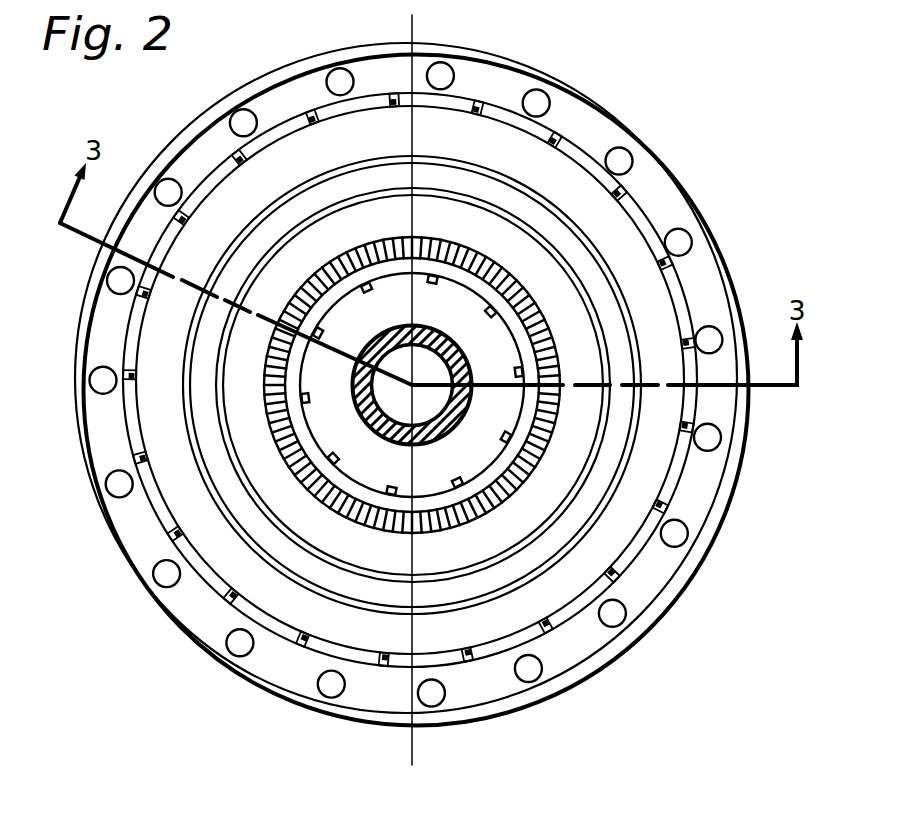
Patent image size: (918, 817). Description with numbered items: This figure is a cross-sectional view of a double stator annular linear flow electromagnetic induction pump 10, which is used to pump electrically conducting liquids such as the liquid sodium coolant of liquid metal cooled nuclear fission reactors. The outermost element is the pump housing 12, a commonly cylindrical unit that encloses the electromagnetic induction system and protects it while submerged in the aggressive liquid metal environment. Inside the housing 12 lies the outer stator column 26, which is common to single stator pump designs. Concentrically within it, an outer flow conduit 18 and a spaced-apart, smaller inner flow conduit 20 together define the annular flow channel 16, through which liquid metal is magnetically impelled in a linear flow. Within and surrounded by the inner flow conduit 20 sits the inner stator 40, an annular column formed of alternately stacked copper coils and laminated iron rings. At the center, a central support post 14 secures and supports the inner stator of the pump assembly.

The double stator annular linear flow electromagnetic induction pump 10 is at (702, 180).
The pump housing 12 is at (727, 518).
The central support post 14 is at (468, 408).
The annular flow channel 16 is at (198, 395).
The outer flow conduit 18 is at (177, 370).
The inner flow conduit 20 is at (217, 435).
The outer stator column 26 is at (128, 325).
The inner stator 40 is at (533, 467).